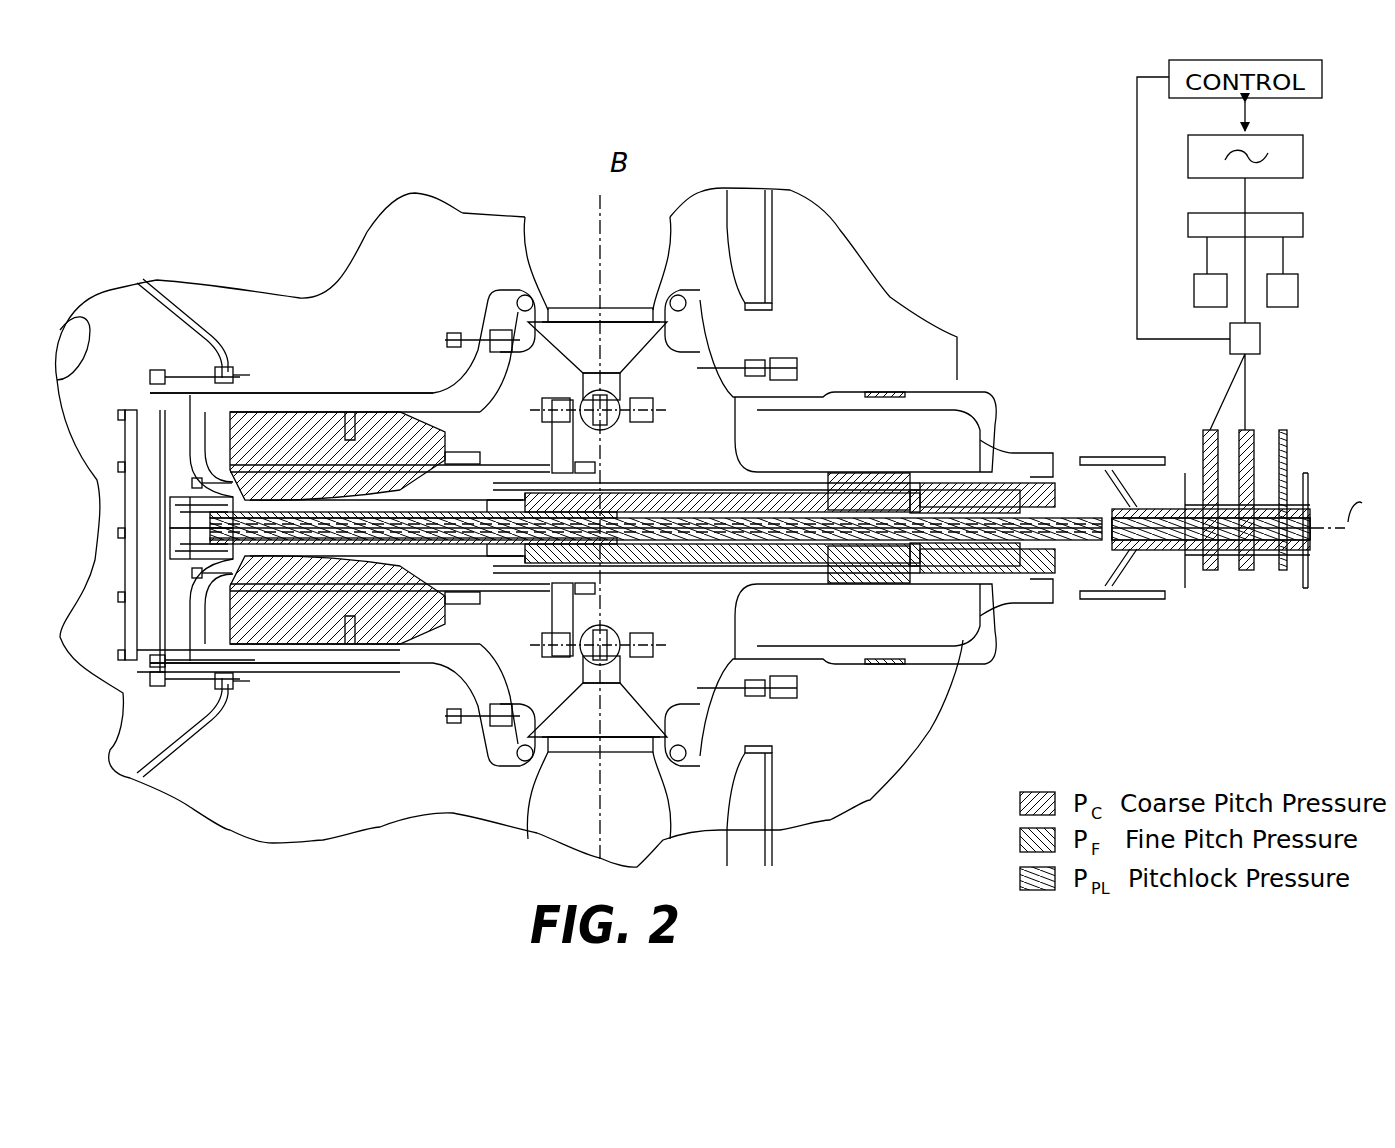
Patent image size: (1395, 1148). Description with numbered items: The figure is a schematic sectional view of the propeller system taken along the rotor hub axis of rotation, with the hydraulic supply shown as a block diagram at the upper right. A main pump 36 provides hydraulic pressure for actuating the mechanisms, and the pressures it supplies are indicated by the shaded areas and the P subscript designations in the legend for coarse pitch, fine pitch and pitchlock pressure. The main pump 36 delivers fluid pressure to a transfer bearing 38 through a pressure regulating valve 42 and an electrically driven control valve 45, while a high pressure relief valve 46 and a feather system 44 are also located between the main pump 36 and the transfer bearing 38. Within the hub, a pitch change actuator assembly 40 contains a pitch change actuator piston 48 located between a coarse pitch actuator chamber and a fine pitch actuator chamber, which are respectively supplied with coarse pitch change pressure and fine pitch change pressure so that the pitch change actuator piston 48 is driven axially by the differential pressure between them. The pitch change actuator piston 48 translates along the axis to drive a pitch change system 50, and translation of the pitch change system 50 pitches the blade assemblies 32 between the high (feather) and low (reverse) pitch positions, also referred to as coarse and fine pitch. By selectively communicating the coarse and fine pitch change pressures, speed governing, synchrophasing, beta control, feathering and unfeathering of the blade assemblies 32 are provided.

The blade assemblies 32 is at (560, 230).
The main pump 36 is at (1303, 167).
The transfer bearing 38 is at (1232, 645).
The pitch change actuator assembly 40 is at (302, 385).
The pressure regulating valve 42 is at (1303, 225).
The feather system 44 is at (1298, 282).
The electrically driven control valve 45 is at (1260, 348).
The high pressure relief valve 46 is at (1194, 282).
The pitch change actuator piston 48 is at (343, 425).
The pitch change system 50 is at (511, 445).